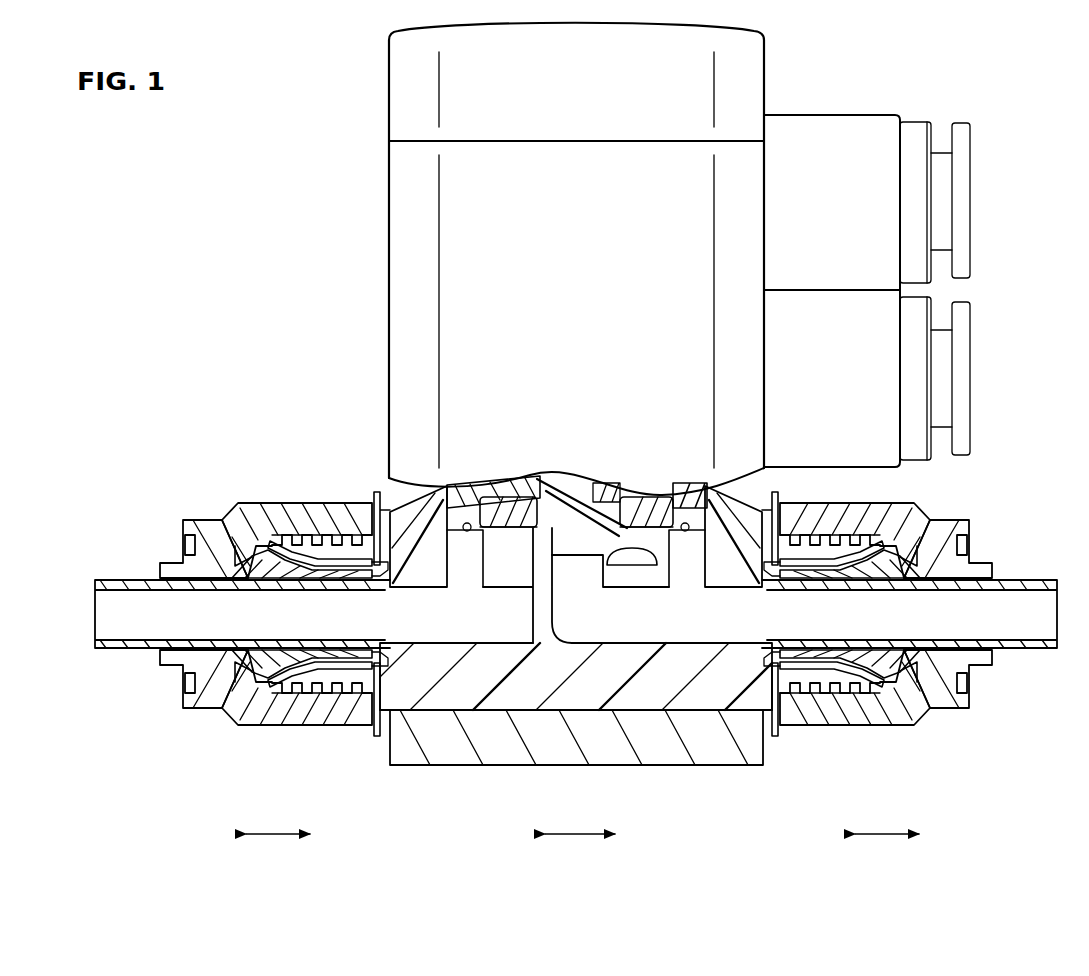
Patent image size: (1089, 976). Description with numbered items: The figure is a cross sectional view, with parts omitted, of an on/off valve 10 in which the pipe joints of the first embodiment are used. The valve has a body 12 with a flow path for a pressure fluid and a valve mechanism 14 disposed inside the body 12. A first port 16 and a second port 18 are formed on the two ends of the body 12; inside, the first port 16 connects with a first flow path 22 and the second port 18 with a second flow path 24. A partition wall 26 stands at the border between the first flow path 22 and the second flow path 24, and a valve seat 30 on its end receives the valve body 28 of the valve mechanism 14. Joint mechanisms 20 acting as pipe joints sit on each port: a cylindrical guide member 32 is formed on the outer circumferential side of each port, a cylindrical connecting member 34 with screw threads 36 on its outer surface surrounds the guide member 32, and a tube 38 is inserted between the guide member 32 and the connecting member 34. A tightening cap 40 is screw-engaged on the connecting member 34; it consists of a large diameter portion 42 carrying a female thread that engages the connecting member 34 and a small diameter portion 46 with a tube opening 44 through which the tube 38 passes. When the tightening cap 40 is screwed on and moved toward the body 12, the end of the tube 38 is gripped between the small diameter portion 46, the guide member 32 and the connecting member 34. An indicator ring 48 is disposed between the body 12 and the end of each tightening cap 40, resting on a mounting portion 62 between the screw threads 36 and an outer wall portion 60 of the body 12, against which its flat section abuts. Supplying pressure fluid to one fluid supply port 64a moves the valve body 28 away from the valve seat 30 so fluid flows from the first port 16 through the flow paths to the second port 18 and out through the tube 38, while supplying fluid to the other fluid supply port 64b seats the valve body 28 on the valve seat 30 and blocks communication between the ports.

The on/off valve 10 is at (252, 135).
The body 12 is at (345, 281).
The valve mechanism 14 is at (590, 462).
The first port 16 is at (814, 662).
The second port 18 is at (340, 662).
The joint mechanism 20 is at (238, 490).
The first flow path 22 is at (645, 628).
The second flow path 24 is at (447, 626).
The partition wall 26 is at (538, 596).
The valve body 28 is at (576, 567).
The valve seat 30 is at (622, 548).
The guide member 32 is at (277, 587).
The connecting member 34 is at (306, 538).
The screw thread 36 is at (290, 538).
The tube 38 is at (128, 650).
The tightening cap 40 is at (218, 722).
The large diameter portion 42 is at (291, 718).
The tube opening 44 is at (150, 596).
The small diameter portion 46 is at (170, 665).
The indicator ring 48 is at (366, 477).
The outer wall portion 60 is at (378, 712).
The mounting portion 62 is at (385, 553).
The fluid supply port 64a is at (972, 384).
The fluid supply port 64b is at (972, 204).